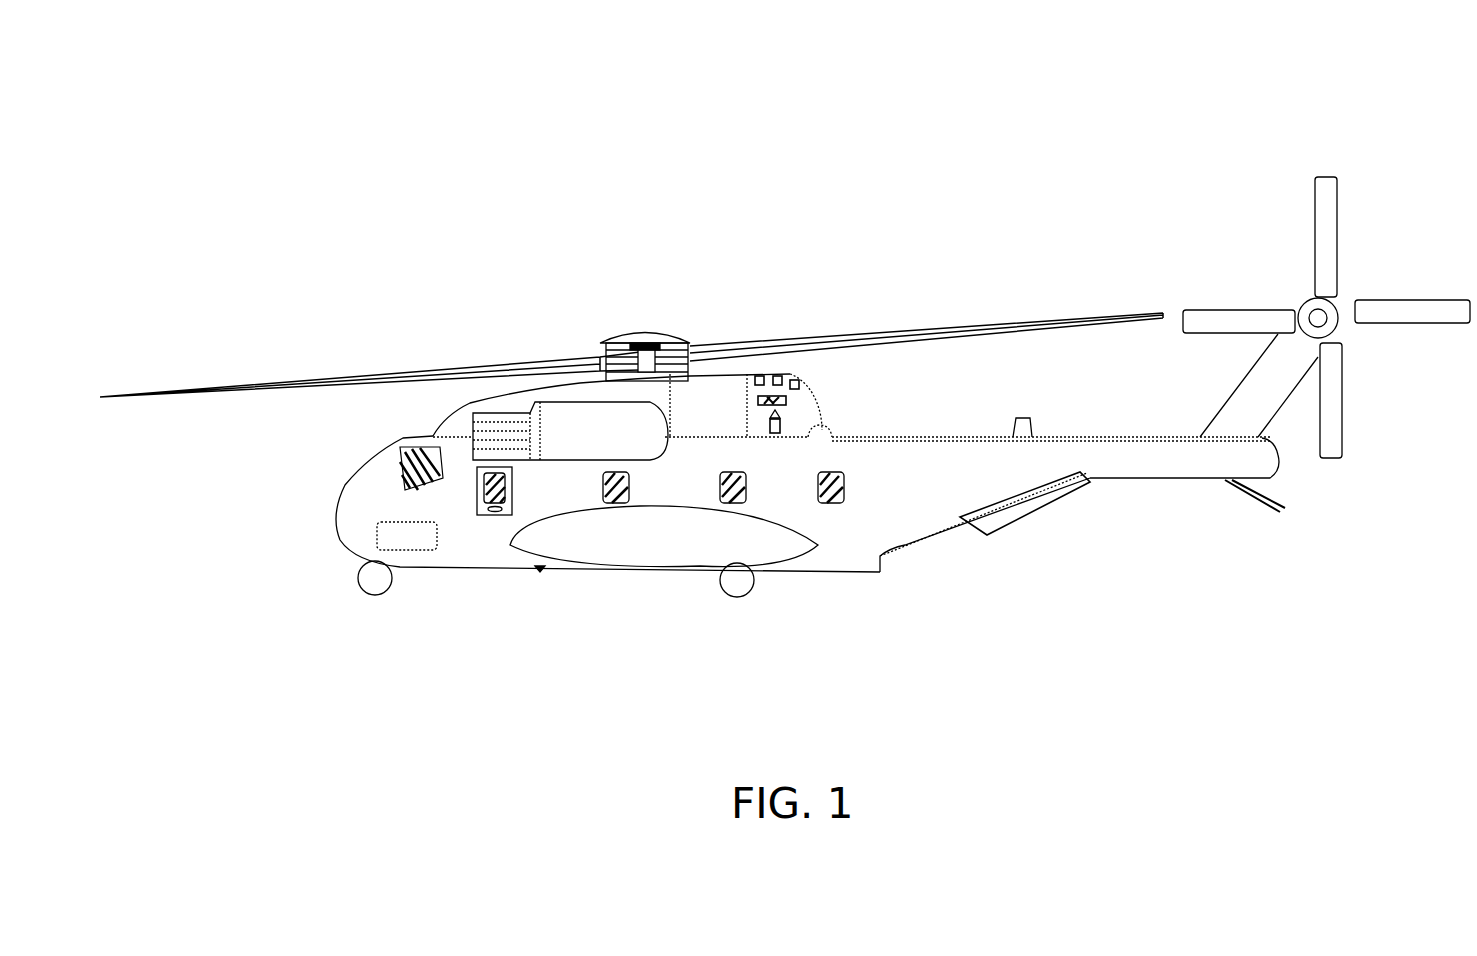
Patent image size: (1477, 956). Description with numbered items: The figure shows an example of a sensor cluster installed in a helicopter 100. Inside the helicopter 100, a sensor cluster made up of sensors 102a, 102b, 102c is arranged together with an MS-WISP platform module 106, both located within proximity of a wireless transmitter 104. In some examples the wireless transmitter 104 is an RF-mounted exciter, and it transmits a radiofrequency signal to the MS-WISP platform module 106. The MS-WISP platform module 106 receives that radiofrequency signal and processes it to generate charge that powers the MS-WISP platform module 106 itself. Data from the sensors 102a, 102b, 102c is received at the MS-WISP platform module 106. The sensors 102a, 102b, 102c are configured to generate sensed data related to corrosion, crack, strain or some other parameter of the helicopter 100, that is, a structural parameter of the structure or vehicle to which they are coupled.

The helicopter 100 is at (282, 88).
The sensor 102a is at (757, 373).
The sensor 102b is at (777, 373).
The sensor 102c is at (794, 378).
The wireless transmitter 104 is at (785, 426).
The MS-WISP platform module 106 is at (790, 400).